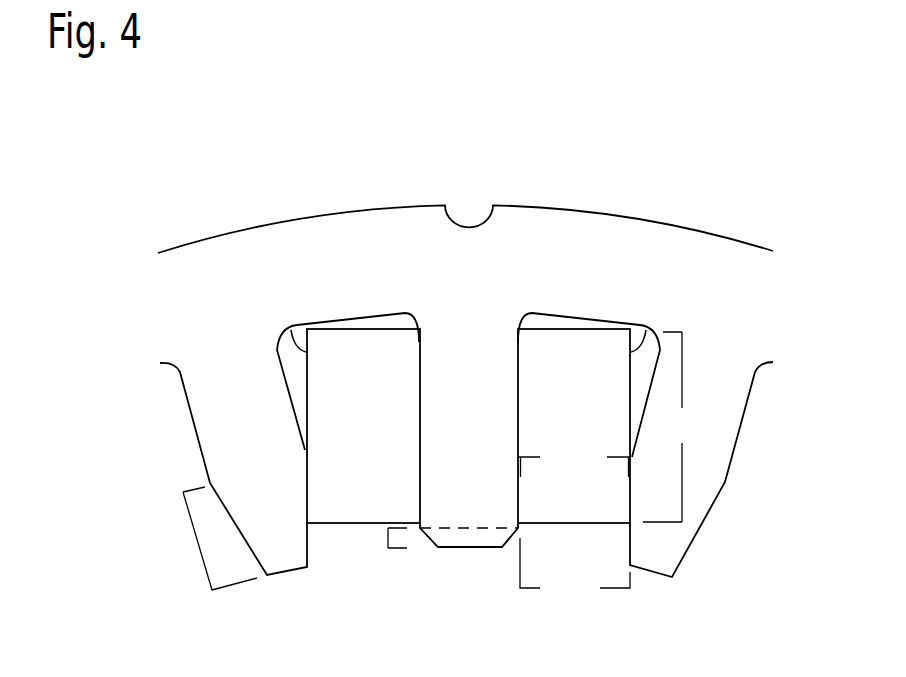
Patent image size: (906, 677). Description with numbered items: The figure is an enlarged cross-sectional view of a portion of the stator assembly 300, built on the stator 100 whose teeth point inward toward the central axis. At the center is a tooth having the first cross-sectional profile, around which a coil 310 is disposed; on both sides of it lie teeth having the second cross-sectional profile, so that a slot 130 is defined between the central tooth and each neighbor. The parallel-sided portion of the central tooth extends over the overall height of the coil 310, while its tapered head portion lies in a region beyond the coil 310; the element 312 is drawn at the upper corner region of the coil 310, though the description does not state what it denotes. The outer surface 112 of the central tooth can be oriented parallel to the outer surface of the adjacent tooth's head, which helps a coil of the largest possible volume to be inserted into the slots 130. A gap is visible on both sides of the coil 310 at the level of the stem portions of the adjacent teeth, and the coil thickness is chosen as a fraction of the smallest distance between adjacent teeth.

The stator 100 is at (713, 230).
The outer surface 112 is at (518, 415).
The slot 130 is at (388, 316).
The stator assembly 300 is at (460, 331).
The coil 310 is at (575, 345).
The pole shoe edge 312 is at (293, 332).